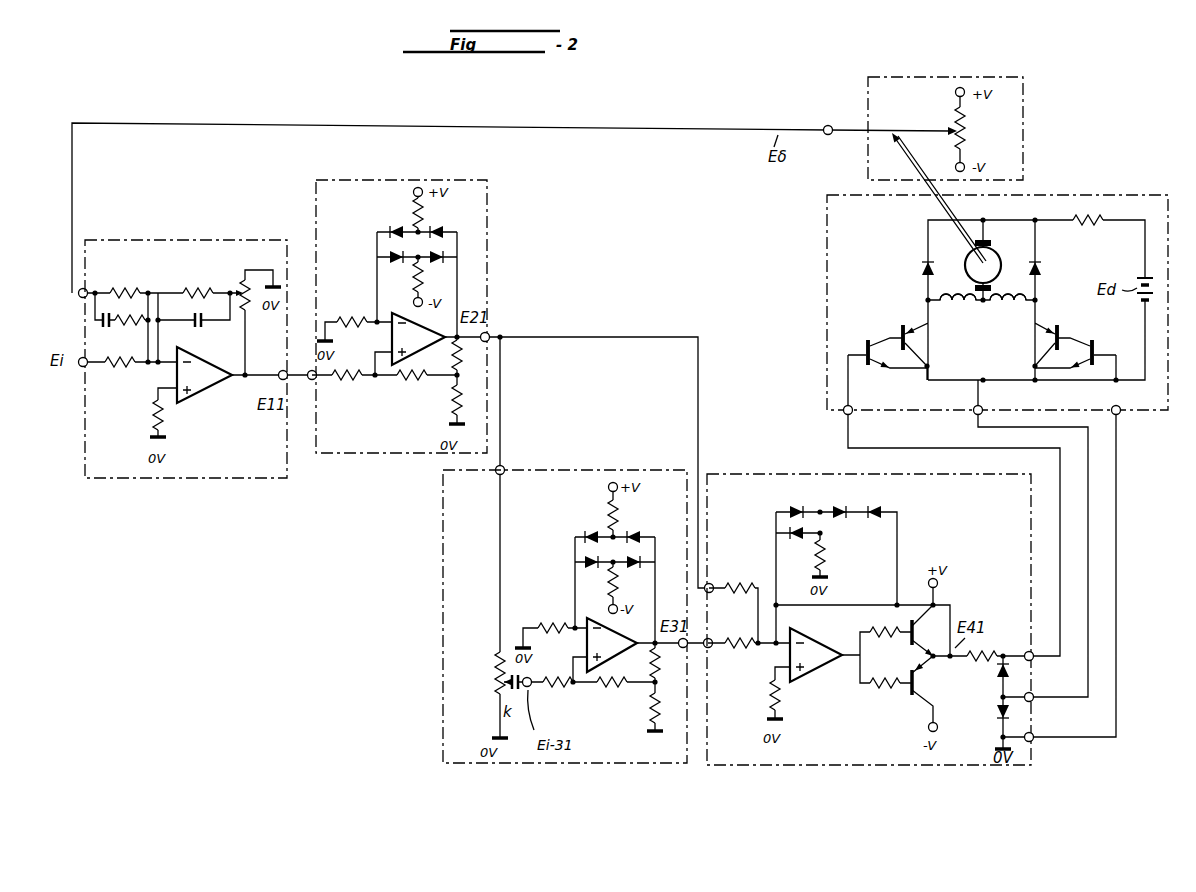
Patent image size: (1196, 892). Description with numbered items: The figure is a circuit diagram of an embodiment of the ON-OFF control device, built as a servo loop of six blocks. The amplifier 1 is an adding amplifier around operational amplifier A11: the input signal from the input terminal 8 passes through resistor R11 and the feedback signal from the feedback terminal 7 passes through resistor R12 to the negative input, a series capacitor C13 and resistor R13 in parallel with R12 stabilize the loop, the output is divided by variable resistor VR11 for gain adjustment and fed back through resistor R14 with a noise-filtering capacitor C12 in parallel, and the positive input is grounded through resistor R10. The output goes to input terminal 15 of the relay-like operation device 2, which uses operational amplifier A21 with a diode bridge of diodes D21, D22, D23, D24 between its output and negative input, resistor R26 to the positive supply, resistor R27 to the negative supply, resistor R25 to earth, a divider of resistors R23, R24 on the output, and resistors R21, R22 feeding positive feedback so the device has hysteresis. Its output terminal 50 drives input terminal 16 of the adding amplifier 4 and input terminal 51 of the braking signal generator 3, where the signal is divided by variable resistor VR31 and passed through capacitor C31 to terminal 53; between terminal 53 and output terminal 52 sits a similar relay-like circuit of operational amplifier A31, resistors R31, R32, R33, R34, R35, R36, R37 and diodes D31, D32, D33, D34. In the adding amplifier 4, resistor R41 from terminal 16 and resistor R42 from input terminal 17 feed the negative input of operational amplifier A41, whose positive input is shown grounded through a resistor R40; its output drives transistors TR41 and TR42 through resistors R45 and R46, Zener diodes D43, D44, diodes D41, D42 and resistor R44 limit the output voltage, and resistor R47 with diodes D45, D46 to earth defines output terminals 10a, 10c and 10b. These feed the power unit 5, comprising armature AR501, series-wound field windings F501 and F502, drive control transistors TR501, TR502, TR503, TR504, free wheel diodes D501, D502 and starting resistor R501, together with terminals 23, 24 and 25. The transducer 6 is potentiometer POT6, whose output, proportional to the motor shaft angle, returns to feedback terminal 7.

The amplifier 1 is at (182, 478).
The relay-like operation device 2 is at (330, 453).
The braking signal generator 3 is at (589, 470).
The adding amplifier 4 is at (754, 474).
The power unit 5 is at (1090, 195).
The transducer 6 is at (1024, 87).
The feedback terminal 7 is at (828, 125).
The input terminal 8 is at (80, 369).
The input terminal 15 is at (286, 380).
The input terminal 16 is at (706, 593).
The input terminal 17 is at (705, 648).
The drive terminal 23 is at (852, 414).
The drive terminal 24 is at (975, 414).
The drive terminal 25 is at (1119, 414).
The output terminal 50 is at (488, 333).
The input terminal 51 is at (503, 467).
The output terminal 52 is at (681, 648).
The terminal 53 is at (530, 679).
The output terminal 10a is at (1033, 659).
The output terminal 10b is at (1033, 740).
The output terminal 10c is at (1033, 700).
The resistor R10 is at (150, 405).
The resistor R11 is at (117, 379).
The feedback resistor R12 is at (125, 283).
The resistor R13 is at (131, 335).
The resistor R14 is at (200, 283).
The capacitor C12 is at (210, 336).
The capacitor C13 is at (102, 334).
The variable resistor VR11 is at (262, 310).
The operational amplifier A11 is at (204, 384).
The resistor R21 is at (343, 389).
The resistor R22 is at (409, 389).
The resistor R23 is at (440, 357).
The resistor R24 is at (455, 409).
The resistor R25 is at (354, 316).
The resistor R26 is at (436, 213).
The resistor R27 is at (436, 277).
The diode D21 is at (400, 219).
The diode D22 is at (377, 257).
The diode D23 is at (450, 232).
The diode D24 is at (470, 257).
The operational amplifier A21 is at (418, 339).
The resistor R31 is at (558, 690).
The resistor R32 is at (608, 694).
The resistor R33 is at (640, 663).
The resistor R34 is at (650, 725).
The resistor R35 is at (551, 627).
The resistor R36 is at (630, 515).
The resistor R37 is at (597, 582).
The diode D31 is at (587, 526).
The diode D32 is at (584, 562).
The diode D33 is at (640, 532).
The diode D34 is at (641, 579).
The operational amplifier A31 is at (606, 638).
The variable resistor VR31 is at (475, 675).
The capacitor C31 is at (516, 692).
The resistor R40 is at (793, 696).
The resistor R41 is at (740, 578).
The resistor R42 is at (739, 662).
The resistor R44 is at (827, 556).
The resistor R45 is at (885, 643).
The resistor R46 is at (881, 697).
The resistor R47 is at (992, 646).
The diode D41 is at (802, 501).
The diode D42 is at (799, 546).
The Zener diode D43 is at (847, 501).
The Zener diode D44 is at (886, 512).
The diode D45 is at (987, 677).
The diode D46 is at (984, 717).
The operational amplifier A41 is at (823, 665).
The transistor TR41 is at (893, 629).
The transistor TR42 is at (918, 720).
The armature AR501 is at (1000, 257).
The starting resistor R501 is at (1092, 235).
The free wheel diode D501 is at (920, 267).
The free wheel diode D502 is at (1057, 271).
The series-wound field winding F501 is at (961, 318).
The series-wound field winding F502 is at (1006, 318).
The motor drive control transistor TR501 is at (911, 344).
The motor drive control transistor TR502 is at (1057, 342).
The motor drive control transistor TR503 is at (856, 350).
The motor drive control transistor TR504 is at (1104, 350).
The potentiometer POT6 is at (983, 128).